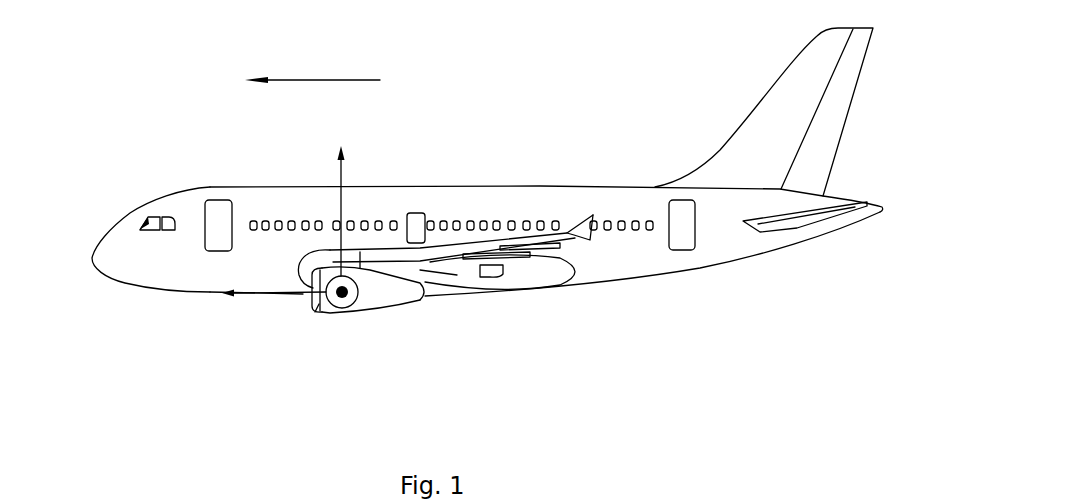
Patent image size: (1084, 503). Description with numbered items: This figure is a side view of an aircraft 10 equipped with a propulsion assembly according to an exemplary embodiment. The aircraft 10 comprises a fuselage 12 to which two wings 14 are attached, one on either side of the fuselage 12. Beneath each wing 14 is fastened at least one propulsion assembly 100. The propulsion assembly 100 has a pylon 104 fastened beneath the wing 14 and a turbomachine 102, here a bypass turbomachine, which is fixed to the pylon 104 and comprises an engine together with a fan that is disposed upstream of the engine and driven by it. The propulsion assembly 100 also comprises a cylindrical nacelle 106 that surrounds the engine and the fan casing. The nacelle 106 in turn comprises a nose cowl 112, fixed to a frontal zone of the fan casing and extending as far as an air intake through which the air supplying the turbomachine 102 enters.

The aircraft 10 is at (632, 108).
The fuselage 12 is at (549, 210).
The wing 14 is at (482, 232).
The propulsion assembly 100 is at (590, 370).
The turbomachine 102 is at (363, 310).
The pylon 104 is at (457, 275).
The nacelle 106 is at (436, 358).
The nose cowl 112 is at (317, 313).